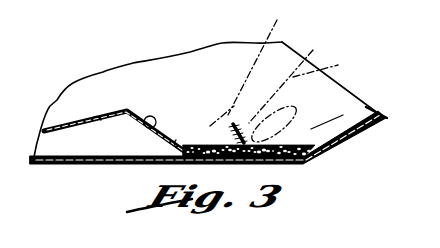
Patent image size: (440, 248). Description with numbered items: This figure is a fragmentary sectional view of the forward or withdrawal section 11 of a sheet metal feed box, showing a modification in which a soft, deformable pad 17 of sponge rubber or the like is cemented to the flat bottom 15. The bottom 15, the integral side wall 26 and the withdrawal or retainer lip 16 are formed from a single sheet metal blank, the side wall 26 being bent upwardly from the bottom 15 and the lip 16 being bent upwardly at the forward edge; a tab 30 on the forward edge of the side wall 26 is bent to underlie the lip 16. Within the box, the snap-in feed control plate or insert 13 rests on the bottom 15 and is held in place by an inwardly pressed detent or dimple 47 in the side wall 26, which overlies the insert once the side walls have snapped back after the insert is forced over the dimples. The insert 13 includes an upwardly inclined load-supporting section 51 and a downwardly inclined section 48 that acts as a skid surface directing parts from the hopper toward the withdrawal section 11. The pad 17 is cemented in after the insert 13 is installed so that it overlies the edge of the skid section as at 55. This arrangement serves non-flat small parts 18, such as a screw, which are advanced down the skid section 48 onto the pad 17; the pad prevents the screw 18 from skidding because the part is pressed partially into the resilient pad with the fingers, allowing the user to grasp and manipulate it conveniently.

The withdrawal section 11 is at (278, 66).
The feed control plate 13 is at (78, 123).
The bottom 15 is at (290, 163).
The retainer lip 16 is at (376, 123).
The deformable pad 17 is at (301, 141).
The small parts 18 is at (233, 124).
The side wall 26 is at (120, 80).
The tab 30 is at (350, 136).
The detent 47 is at (148, 117).
The downwardly inclined section 48 is at (176, 141).
The load-supporting section 51 is at (98, 122).
The edge of the skid section 55 is at (183, 147).